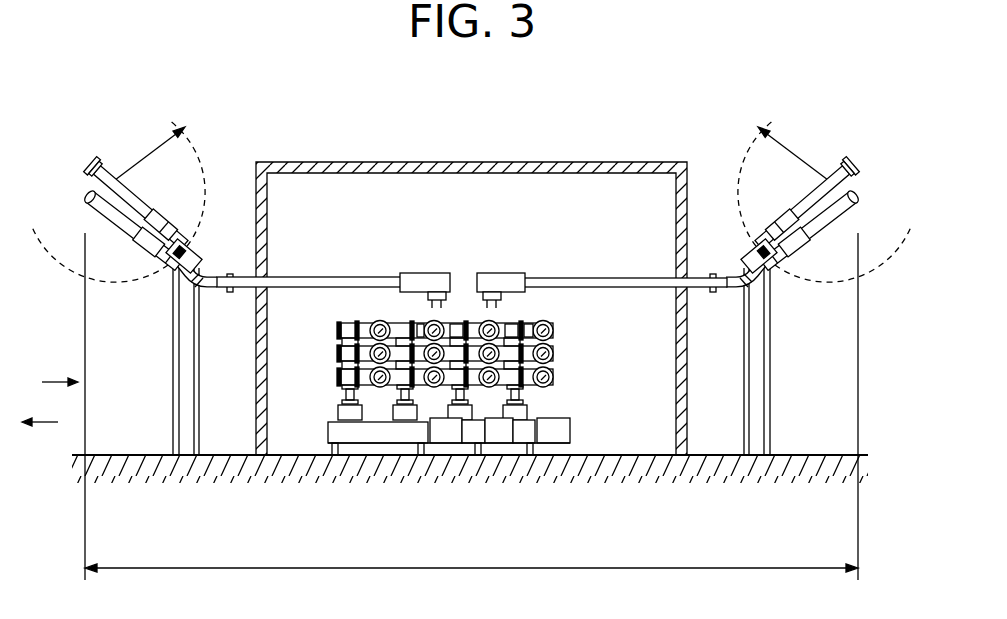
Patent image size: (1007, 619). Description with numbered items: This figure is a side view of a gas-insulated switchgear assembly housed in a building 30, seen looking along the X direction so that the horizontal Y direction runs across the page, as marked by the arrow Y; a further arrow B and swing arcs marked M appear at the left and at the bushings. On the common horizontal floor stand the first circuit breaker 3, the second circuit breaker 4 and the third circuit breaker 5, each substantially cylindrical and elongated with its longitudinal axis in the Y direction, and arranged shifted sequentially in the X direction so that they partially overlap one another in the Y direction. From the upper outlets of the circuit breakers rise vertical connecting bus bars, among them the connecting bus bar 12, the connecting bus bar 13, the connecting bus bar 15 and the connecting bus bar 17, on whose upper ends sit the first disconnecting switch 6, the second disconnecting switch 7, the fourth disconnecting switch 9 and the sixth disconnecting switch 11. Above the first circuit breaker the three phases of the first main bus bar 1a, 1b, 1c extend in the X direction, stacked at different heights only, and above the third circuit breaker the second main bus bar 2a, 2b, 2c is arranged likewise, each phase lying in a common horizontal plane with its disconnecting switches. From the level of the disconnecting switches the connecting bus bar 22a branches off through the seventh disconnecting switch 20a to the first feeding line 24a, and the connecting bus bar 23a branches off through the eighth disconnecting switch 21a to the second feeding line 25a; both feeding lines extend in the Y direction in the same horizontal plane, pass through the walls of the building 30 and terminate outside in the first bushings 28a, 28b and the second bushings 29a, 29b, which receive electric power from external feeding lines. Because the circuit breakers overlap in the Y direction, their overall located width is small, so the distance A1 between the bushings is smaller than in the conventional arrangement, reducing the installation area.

The building 30 is at (633, 162).
The first feeding line 24a is at (287, 283).
The second feeding line 25a is at (623, 286).
The seventh disconnecting switch 20a is at (415, 282).
The connecting bus bar 22a is at (437, 291).
The connecting bus bar 23a is at (508, 282).
The eighth disconnecting switch 21a is at (510, 279).
The first disconnecting switch 6 is at (372, 326).
The connecting bus bar 13 is at (407, 330).
The second disconnecting switch 7 is at (421, 330).
The connecting bus bar 15 is at (463, 329).
The fourth disconnecting switch 9 is at (483, 329).
The connecting bus bar 17 is at (518, 329).
The sixth disconnecting switch 11 is at (543, 316).
The connecting bus bar 12 is at (337, 333).
The first main bus bar 1a is at (338, 344).
The first main bus bar 1b is at (338, 369).
The first main bus bar 1c is at (347, 392).
The second main bus bar 2a is at (554, 333).
The second main bus bar 2b is at (554, 356).
The second main bus bar 2c is at (554, 379).
The first circuit breaker 3 is at (407, 433).
The second circuit breaker 4 is at (470, 433).
The third circuit breaker 5 is at (522, 433).
The first bushing 28a is at (118, 218).
The first bushing 28b is at (133, 203).
The second bushing 29a is at (817, 227).
The second bushing 29b is at (807, 207).
The distance between the bushings A1 is at (471, 406).
The direction B is at (49, 381).
The Y direction Y is at (50, 421).
The swing direction M is at (471, 153).